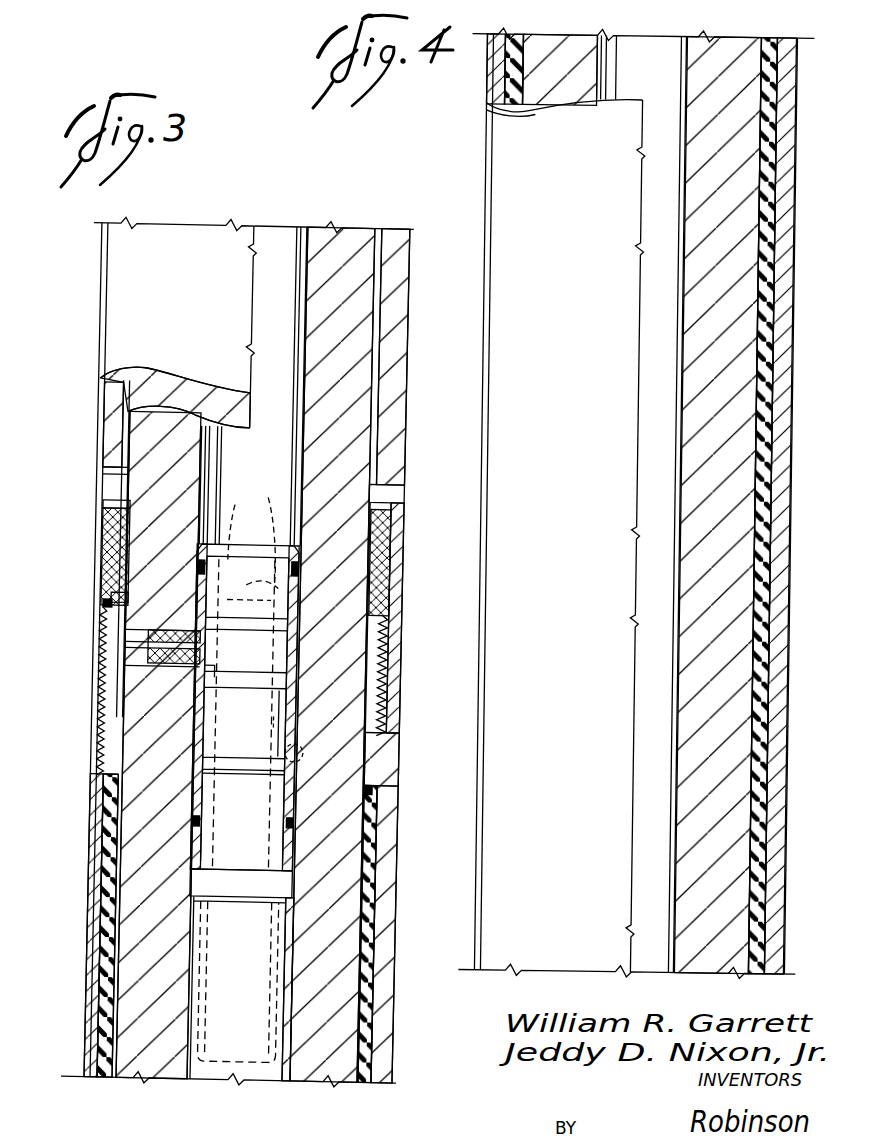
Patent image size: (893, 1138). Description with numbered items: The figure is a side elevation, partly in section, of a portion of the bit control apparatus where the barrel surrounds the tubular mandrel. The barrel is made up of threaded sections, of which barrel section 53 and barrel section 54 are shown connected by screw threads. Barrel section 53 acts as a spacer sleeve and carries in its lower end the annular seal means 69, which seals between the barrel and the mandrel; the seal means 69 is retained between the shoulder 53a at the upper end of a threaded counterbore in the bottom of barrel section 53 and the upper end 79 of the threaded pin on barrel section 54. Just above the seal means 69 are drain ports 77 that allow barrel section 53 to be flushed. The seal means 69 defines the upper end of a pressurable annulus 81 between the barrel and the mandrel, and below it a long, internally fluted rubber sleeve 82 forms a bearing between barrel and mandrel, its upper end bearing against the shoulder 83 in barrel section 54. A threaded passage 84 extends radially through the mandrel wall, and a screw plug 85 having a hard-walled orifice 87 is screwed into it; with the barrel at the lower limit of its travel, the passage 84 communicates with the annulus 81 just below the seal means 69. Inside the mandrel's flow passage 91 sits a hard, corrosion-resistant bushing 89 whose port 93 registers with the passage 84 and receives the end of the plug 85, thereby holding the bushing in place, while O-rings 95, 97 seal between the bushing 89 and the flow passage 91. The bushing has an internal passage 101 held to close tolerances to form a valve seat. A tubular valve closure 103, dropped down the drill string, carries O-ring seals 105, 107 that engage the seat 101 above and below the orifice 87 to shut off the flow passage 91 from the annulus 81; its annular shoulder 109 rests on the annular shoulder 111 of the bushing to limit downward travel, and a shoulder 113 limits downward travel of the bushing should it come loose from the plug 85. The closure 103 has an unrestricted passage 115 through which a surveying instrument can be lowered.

In FIG. 3, the barrel section 53 is at (404, 258).
In FIG. 3, the shoulder 53a is at (103, 514).
In FIG. 3, the barrel section 54 is at (398, 864).
In FIG. 4, the barrel section 54 is at (790, 176).
In FIG. 3, the annular seal means 69 is at (103, 552).
In FIG. 3, the drain ports 77 is at (398, 494).
In FIG. 3, the upper end of threaded pin 79 is at (103, 604).
In FIG. 3, the pressurable annulus 81 is at (118, 640).
In FIG. 3, the rubber sleeve 82 is at (112, 847).
In FIG. 4, the rubber sleeve 82 is at (765, 481).
In FIG. 3, the shoulder 83 is at (374, 790).
In FIG. 3, the threaded passage 84 is at (150, 642).
In FIG. 3, the screw plug 85 is at (125, 680).
In FIG. 3, the orifice 87 is at (150, 657).
In FIG. 3, the bushing 89 is at (298, 608).
In FIG. 3, the flow passage 91 is at (297, 284).
In FIG. 3, the port 93 is at (205, 672).
In FIG. 3, the O-ring 95 is at (297, 566).
In FIG. 3, the O-ring 97 is at (300, 820).
In FIG. 3, the internal passage 101 is at (287, 697).
In FIG. 3, the tubular valve closure 103 is at (261, 543).
In FIG. 3, the O-ring seal 105 is at (253, 610).
In FIG. 3, the O-ring seal 107 is at (275, 726).
In FIG. 3, the annular shoulder 109 is at (288, 746).
In FIG. 3, the annular shoulder 111 is at (270, 773).
In FIG. 3, the shoulder 113 is at (267, 886).
In FIG. 3, the unrestricted passage 115 is at (245, 486).